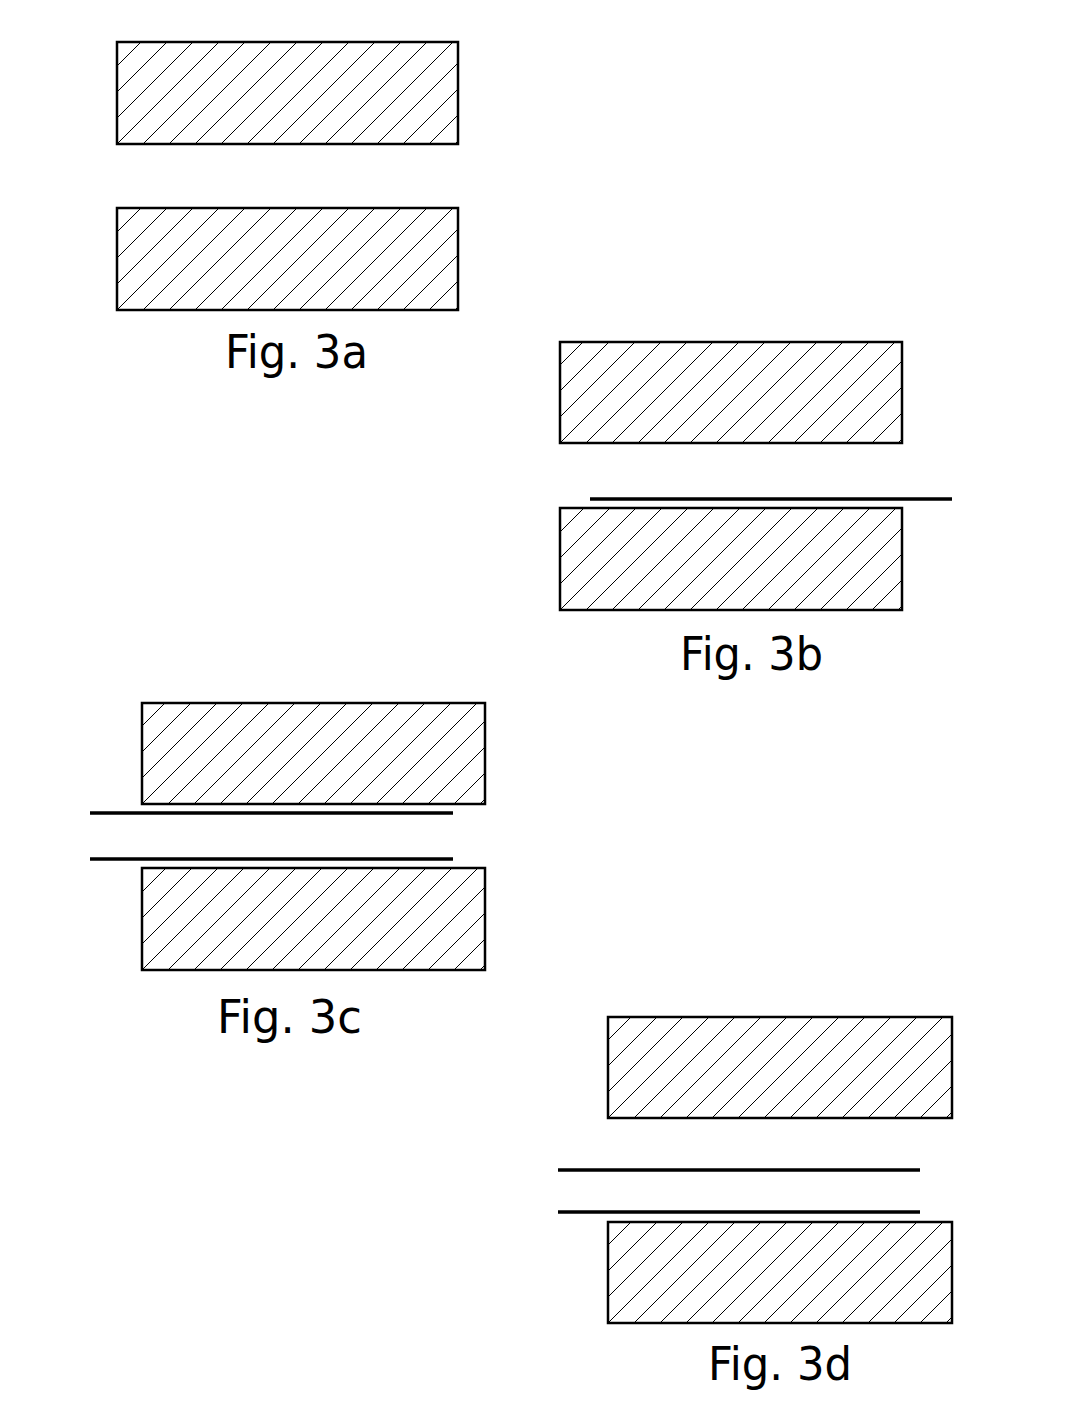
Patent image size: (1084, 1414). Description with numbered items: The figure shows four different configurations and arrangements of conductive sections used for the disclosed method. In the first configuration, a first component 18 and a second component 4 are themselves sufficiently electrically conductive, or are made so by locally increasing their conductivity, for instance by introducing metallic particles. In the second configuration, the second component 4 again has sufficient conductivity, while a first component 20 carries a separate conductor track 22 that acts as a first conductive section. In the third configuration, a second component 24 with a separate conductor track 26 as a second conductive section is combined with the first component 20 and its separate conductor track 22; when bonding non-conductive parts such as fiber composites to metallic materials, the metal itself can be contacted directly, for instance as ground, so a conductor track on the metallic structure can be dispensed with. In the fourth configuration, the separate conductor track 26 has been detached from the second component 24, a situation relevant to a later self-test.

In FIG. 3A, the second component 4 is at (450, 83).
In FIG. 3B, the second component 4 is at (773, 352).
In FIG. 3A, the first component 18 is at (447, 250).
In FIG. 3B, the first component 20 is at (570, 538).
In FIG. 3C, the first component 20 is at (473, 930).
In FIG. 3D, the first component 20 is at (620, 1303).
In FIG. 3B, the conductor track 22 is at (748, 496).
In FIG. 3C, the conductor track 22 is at (110, 862).
In FIG. 3D, the conductor track 22 is at (578, 1217).
In FIG. 3C, the second component 24 is at (222, 717).
In FIG. 3D, the second component 24 is at (690, 1030).
In FIG. 3C, the conductor track 26 is at (117, 810).
In FIG. 3D, the conductor track 26 is at (570, 1168).